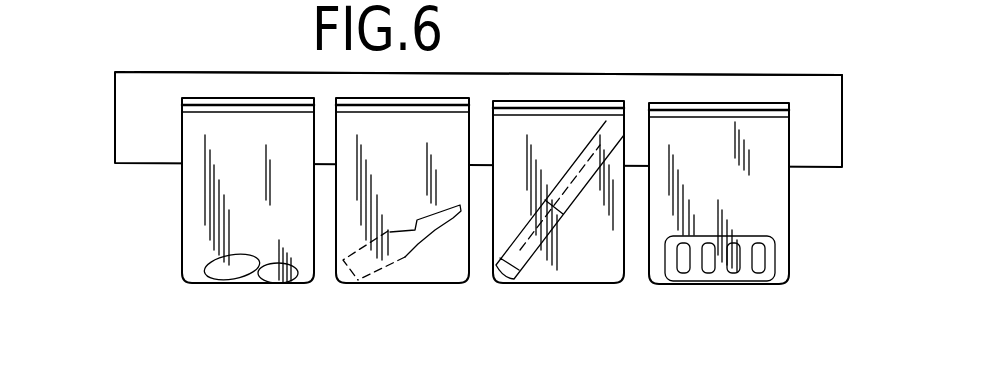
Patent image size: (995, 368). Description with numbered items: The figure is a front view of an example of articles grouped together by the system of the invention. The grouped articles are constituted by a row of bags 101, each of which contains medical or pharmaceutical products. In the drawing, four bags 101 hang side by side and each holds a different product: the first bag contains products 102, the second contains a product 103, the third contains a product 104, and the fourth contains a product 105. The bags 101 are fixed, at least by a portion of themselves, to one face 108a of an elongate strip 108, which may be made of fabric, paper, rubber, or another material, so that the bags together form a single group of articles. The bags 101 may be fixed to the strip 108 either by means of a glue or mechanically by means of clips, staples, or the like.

The bags 101 is at (195, 220).
The medical or pharmaceutical product 102 is at (268, 272).
The medical or pharmaceutical product 103 is at (375, 267).
The medical or pharmaceutical product 104 is at (530, 253).
The medical or pharmaceutical product 105 is at (695, 273).
The strip 108 is at (96, 107).
The face of the strip 108a is at (157, 92).